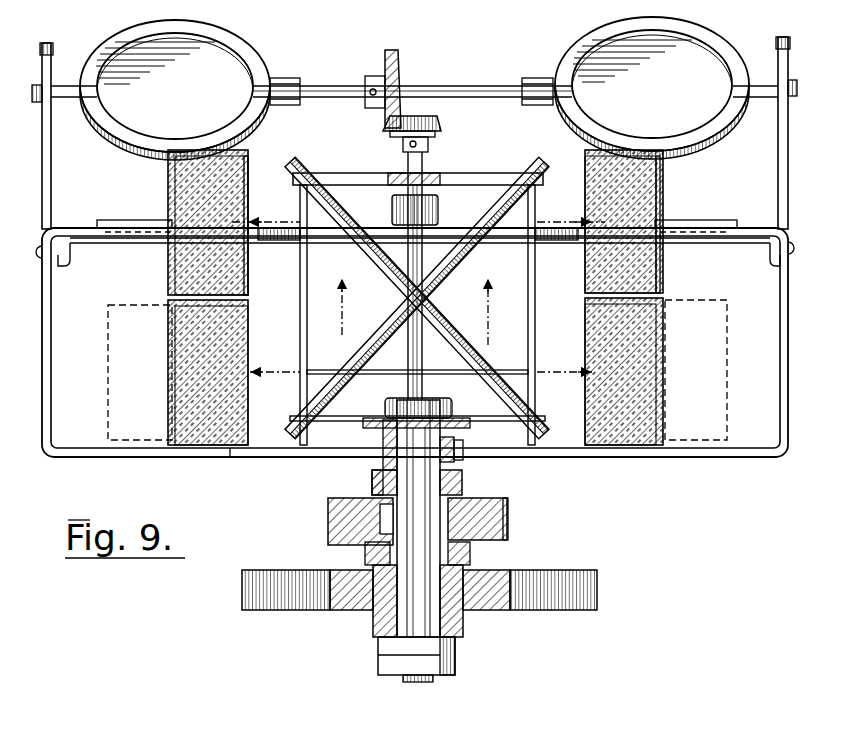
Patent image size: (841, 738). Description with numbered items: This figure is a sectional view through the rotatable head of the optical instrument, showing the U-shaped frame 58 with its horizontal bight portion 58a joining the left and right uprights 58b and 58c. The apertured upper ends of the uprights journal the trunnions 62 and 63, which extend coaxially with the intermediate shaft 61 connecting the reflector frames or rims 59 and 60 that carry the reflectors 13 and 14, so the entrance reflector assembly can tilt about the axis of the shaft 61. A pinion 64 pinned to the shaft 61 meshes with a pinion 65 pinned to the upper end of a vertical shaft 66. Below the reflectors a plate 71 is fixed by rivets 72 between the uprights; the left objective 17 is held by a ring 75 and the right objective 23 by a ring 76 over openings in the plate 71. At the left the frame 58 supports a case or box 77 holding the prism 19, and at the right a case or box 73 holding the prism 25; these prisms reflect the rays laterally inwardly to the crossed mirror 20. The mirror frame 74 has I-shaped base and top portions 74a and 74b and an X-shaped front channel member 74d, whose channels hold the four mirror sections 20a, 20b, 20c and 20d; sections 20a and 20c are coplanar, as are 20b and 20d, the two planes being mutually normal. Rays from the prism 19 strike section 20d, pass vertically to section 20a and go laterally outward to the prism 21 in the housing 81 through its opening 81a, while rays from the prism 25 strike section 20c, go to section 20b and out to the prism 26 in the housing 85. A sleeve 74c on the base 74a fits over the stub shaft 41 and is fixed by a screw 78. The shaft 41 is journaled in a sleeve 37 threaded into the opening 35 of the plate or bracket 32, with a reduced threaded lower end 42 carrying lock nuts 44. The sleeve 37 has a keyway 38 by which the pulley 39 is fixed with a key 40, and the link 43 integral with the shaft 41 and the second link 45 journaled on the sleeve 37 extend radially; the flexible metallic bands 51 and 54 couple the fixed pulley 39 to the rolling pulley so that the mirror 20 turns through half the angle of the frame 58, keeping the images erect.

The reflector 13 is at (128, 50).
The reflector 14 is at (705, 50).
The objective 17 is at (128, 228).
The prism 19 is at (240, 345).
The crossed mirror 20 is at (352, 172).
The mirror section 20a is at (343, 226).
The mirror section 20b is at (492, 224).
The mirror section 20c is at (440, 332).
The mirror section 20d is at (388, 342).
The prism 21 is at (238, 208).
The right objective 23 is at (680, 226).
The prism 25 is at (592, 330).
The prism 26 is at (592, 190).
The plate or bracket 32 is at (490, 598).
The opening 35 is at (396, 612).
The sleeve 37 is at (390, 600).
The keyway 38 is at (372, 486).
The pulley 39 is at (507, 511).
The key 40 is at (366, 552).
The stub shaft 41 is at (428, 404).
The reduced threaded lower end 42 is at (412, 682).
The link 43 is at (464, 486).
The lock nuts 44 is at (456, 660).
The second link 45 is at (470, 556).
The flexible metallic band or belt 51 is at (328, 510).
The second flexible metallic band or belt 54 is at (510, 532).
The U-shaped frame 58 is at (752, 458).
The horizontal or bight portion 58a is at (236, 449).
The upright 58b is at (51, 186).
The upright 58c is at (780, 149).
The reflector frame or rim 59 is at (250, 52).
The reflector frame or rim 60 is at (574, 40).
The intermediate shaft 61 is at (462, 86).
The trunnion 62 is at (36, 85).
The trunnion 63 is at (792, 80).
The pinion 64 is at (388, 52).
The pinion 65 is at (434, 128).
The shaft 66 is at (423, 165).
The plate 71 is at (108, 245).
The rivets 72 is at (68, 263).
The case or box 73 is at (716, 336).
The mirror frame 74 is at (306, 322).
The base portion 74a is at (478, 420).
The top portion 74b is at (482, 183).
The sleeve 74c is at (380, 452).
The front channel member 74d is at (302, 184).
The ring 75 is at (100, 220).
The ring 76 is at (718, 220).
The case or box 77 is at (112, 353).
The screw 78 is at (466, 458).
The prism housing and eyepiece support 81 is at (168, 270).
The opening 81a is at (248, 266).
The prism housing and eyepiece support 85 is at (665, 268).